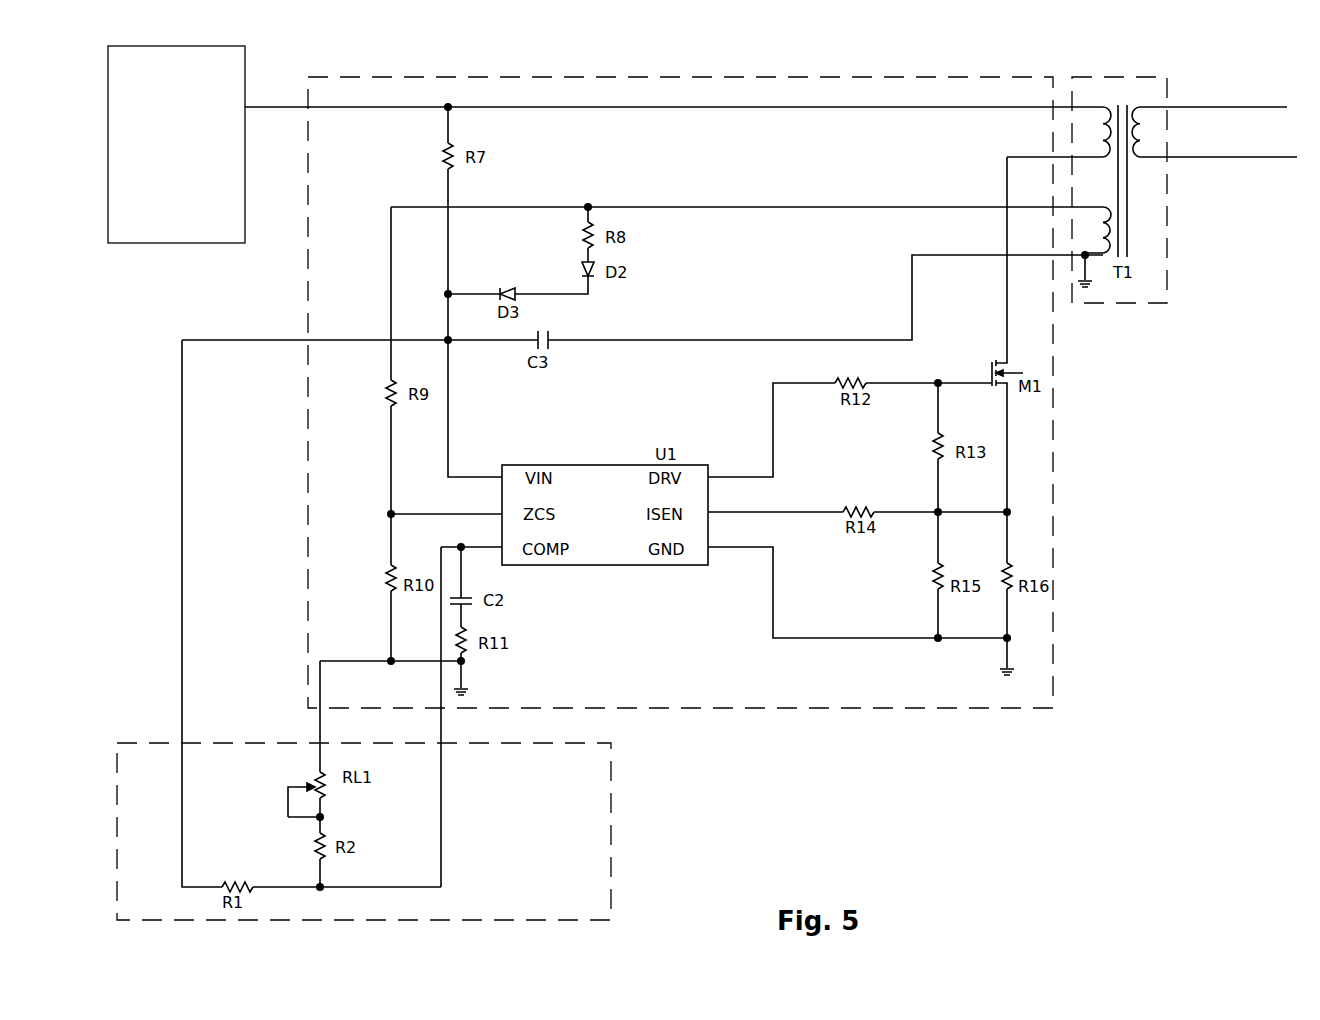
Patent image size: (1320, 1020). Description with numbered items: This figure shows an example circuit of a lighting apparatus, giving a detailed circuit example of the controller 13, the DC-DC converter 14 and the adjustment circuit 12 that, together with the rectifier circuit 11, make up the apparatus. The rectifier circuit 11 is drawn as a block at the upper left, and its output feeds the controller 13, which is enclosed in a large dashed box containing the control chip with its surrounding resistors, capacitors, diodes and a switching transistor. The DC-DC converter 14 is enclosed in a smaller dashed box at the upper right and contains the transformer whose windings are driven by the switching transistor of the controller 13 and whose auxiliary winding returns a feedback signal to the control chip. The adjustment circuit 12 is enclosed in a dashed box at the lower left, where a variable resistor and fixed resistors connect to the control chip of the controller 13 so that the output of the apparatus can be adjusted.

The rectifier circuit 11 is at (123, 46).
The adjustment circuit 12 is at (611, 790).
The controller 13 is at (753, 77).
The DC-DC converter 14 is at (1135, 77).